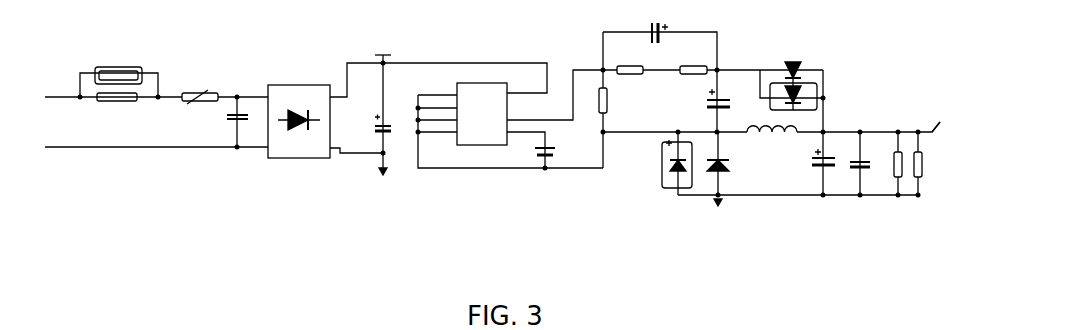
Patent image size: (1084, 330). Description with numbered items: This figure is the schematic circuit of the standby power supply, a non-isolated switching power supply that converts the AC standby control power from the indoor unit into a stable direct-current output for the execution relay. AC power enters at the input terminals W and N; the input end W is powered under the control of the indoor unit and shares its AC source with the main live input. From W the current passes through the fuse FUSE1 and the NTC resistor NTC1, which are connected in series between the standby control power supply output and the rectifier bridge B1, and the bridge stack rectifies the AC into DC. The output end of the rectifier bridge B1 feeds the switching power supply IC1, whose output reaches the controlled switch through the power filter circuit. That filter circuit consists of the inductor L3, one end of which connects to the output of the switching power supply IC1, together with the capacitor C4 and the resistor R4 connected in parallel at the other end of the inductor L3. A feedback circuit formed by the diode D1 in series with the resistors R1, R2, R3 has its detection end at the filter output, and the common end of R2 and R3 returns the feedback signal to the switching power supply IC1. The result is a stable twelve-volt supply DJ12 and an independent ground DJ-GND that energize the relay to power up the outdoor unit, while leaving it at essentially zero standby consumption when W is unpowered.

The input end W is at (156, 87).
The power input end N is at (156, 137).
The fuse FUSE1 is at (119, 70).
The NTC resistor NTC1 is at (211, 88).
The rectifier bridge B1 is at (407, 110).
The switching power supply IC1 is at (510, 120).
The resistor R1 is at (692, 58).
The resistor R2 is at (631, 58).
The resistor R3 is at (622, 100).
The resistor R4 is at (925, 165).
The capacitor C4 is at (810, 167).
The diode D1 is at (793, 75).
The inductor L3 is at (771, 141).
The 12V power supply DJ12 is at (932, 114).
The independent ground DJ-GND is at (798, 215).